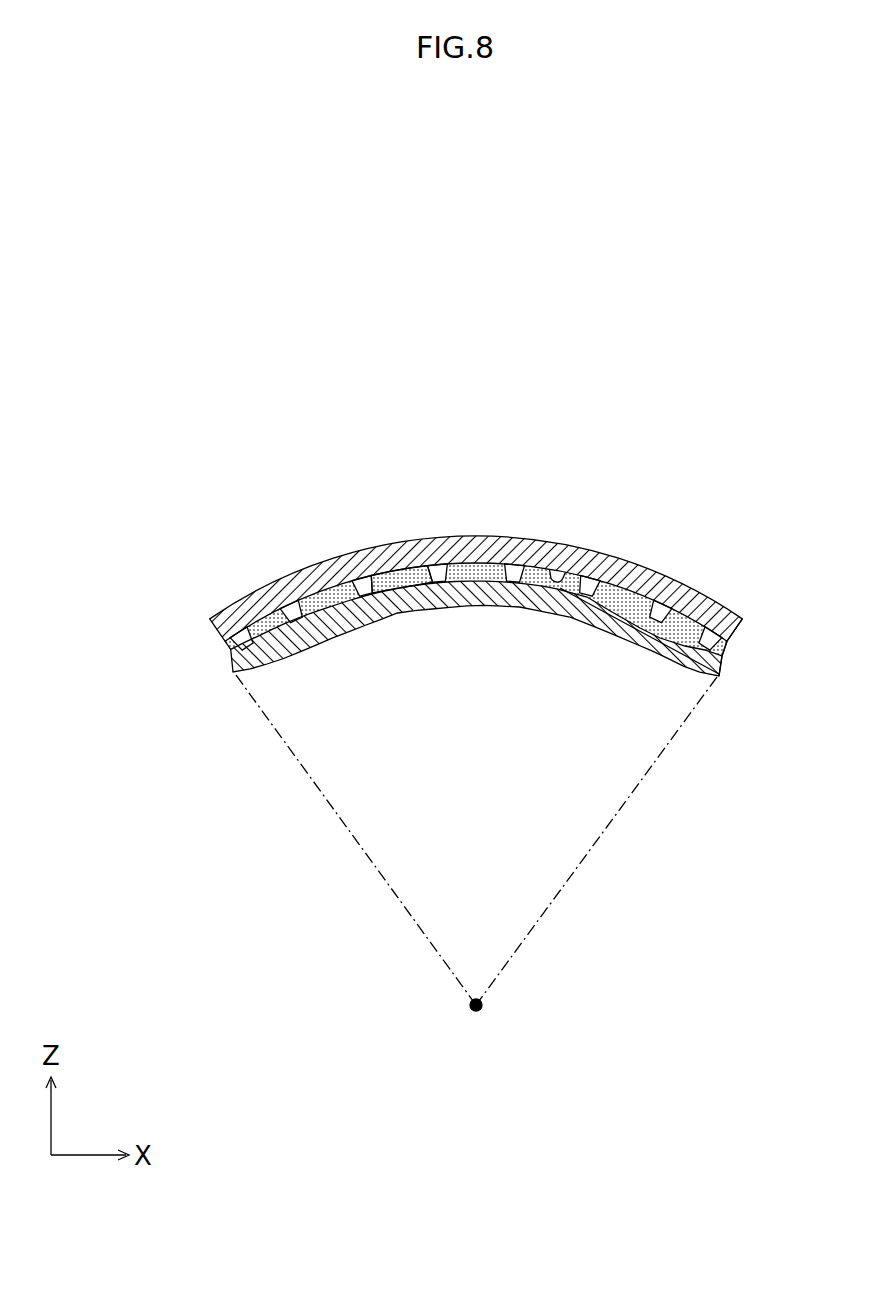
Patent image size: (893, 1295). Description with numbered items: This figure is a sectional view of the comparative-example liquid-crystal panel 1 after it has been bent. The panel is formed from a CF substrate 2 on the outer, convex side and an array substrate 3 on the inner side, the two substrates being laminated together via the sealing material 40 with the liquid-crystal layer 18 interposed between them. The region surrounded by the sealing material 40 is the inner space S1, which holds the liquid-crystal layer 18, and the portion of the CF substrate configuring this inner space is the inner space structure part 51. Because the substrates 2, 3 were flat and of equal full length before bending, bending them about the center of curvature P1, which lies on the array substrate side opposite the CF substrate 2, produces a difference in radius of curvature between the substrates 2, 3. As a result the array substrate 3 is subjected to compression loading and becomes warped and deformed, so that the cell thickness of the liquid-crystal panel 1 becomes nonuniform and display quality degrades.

The liquid-crystal panel 1 is at (232, 504).
The CF substrate 2 is at (519, 560).
The array substrate 3 is at (517, 590).
The liquid-crystal layer 18 is at (400, 578).
The sealing material 40 is at (722, 642).
The inner space structure part 51 is at (404, 558).
The inner space S1 is at (561, 568).
The center of curvature P1 is at (475, 1025).